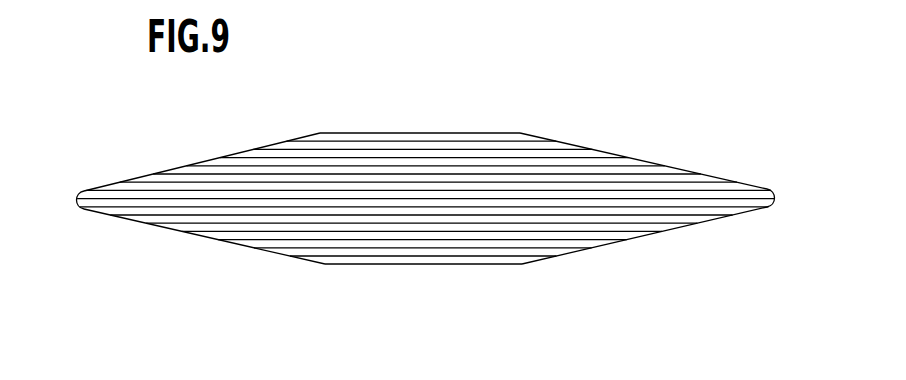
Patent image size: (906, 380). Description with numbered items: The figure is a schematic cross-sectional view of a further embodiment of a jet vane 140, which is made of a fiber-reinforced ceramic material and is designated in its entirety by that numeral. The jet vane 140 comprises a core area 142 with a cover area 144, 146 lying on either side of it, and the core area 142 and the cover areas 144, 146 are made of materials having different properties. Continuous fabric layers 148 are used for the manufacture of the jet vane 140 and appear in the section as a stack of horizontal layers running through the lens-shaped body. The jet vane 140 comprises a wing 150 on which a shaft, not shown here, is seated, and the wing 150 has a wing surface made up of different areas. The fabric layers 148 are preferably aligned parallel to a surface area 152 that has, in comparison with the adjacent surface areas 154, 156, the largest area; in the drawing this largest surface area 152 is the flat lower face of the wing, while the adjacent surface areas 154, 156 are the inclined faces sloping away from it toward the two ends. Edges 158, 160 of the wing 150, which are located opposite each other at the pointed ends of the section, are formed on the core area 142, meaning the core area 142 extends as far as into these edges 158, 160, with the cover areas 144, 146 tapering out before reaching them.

The jet vane 140 is at (424, 143).
The core area 142 is at (697, 195).
The cover area 144 is at (375, 138).
The cover area 146 is at (425, 252).
The fabric layers 148 is at (310, 240).
The wing 150 is at (599, 126).
The surface area 152 is at (493, 265).
The surface area 154 is at (200, 233).
The surface area 156 is at (658, 233).
The edge 158 is at (77, 200).
The edge 160 is at (776, 200).